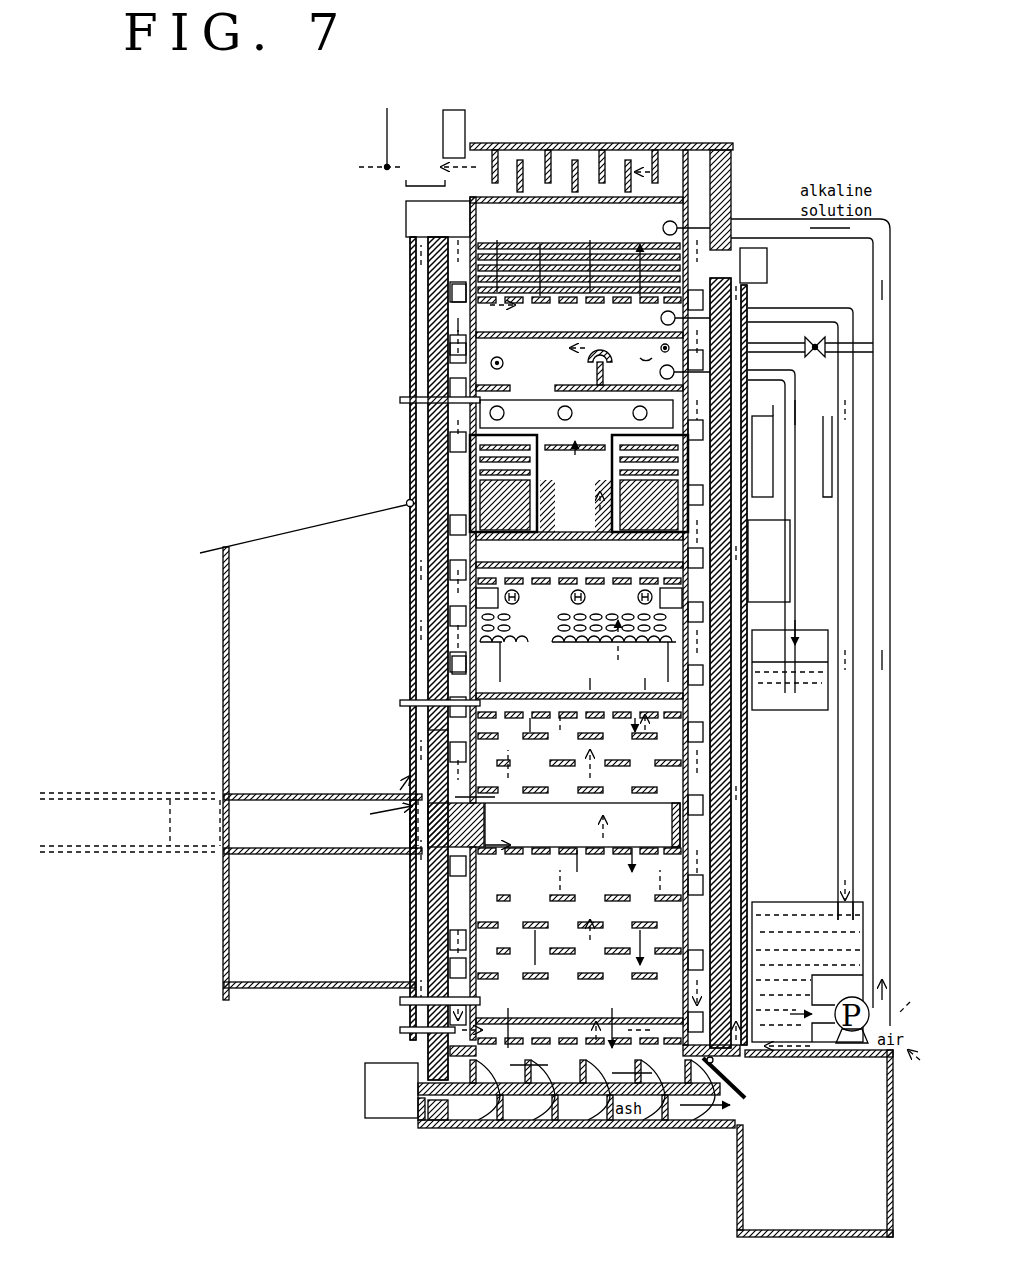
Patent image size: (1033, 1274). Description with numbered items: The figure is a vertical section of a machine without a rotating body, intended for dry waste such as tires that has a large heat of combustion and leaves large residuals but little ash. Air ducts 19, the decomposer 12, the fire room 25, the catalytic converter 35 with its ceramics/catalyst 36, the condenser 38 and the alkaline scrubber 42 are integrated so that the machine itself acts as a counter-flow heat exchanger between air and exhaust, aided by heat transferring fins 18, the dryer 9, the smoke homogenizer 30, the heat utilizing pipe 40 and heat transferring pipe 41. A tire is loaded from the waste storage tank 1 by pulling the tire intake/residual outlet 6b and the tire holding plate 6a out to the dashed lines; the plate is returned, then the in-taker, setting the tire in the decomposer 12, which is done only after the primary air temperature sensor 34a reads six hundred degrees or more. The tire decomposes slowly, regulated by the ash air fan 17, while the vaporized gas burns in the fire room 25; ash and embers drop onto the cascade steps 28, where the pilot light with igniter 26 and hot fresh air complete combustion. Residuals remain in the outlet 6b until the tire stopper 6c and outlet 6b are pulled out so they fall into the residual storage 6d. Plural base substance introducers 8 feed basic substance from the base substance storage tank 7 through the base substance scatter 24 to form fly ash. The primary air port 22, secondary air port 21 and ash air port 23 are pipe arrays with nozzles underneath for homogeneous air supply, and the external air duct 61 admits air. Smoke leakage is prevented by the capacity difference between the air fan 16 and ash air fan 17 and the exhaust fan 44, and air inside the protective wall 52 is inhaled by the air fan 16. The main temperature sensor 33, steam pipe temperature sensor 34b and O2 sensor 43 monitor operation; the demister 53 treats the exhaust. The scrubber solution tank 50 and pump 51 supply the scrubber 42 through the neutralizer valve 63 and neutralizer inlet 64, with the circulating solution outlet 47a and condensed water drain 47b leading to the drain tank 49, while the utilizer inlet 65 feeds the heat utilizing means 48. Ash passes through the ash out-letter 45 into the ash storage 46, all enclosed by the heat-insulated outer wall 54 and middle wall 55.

The waste storage tank 1 is at (243, 773).
The tire holding plate 6a is at (348, 797).
The tire intake/residual outlet 6b is at (412, 846).
The tire stopper 6c is at (348, 854).
The residual storage 6d is at (319, 969).
The base substance storage tank 7 is at (769, 561).
The base substance introducer 8 is at (578, 597).
The dryer 9 is at (480, 357).
The decomposer 12 is at (554, 834).
The air fan 16 is at (410, 222).
The ash air fan 17 is at (779, 273).
The heat transferring fin 18 is at (465, 292).
The air duct 19 is at (455, 322).
The secondary air port 21 is at (565, 571).
The primary air port 22 is at (570, 713).
The ash air port 23 is at (572, 1030).
The base substance scatter 24 is at (574, 624).
The fire room 25 is at (578, 659).
The pilot light with igniter 26 is at (400, 1001).
The cascade steps/embers dropper 28 is at (579, 924).
The smoke homogenizer 30 is at (575, 760).
The main temperature sensor 33 is at (400, 1030).
The primary air temperature sensor 34a is at (400, 703).
The steam pipe temperature sensor 34b is at (400, 400).
The catalytic converter 35 is at (579, 483).
The ceramics/catalyst 36 is at (579, 512).
The condenser 38 is at (579, 361).
The heat utilizing pipe 40 is at (576, 423).
The heat transferring pipe 41 is at (616, 426).
The alkaline scrubber 42 is at (594, 273).
The O2 sensor 43 is at (458, 121).
The exhaust fan 44 is at (410, 152).
The ash out-letter 45 is at (376, 1105).
The ash storage 46 is at (815, 1181).
The circulating solution outlet 47a is at (688, 316).
The condensed water drain 47b is at (688, 375).
The heat utilizing means 48 is at (792, 451).
The drain tank 49 is at (790, 670).
The scrubber solution tank 50 is at (807, 954).
The pump 51 is at (819, 1143).
The protective wall 52 is at (410, 458).
The demister 53 is at (607, 191).
The outer wall (heat insulated) 54 is at (435, 596).
The middle wall 55 is at (473, 487).
The external air duct 61 is at (422, 730).
The neutralizer valve 63 is at (810, 349).
The neutralizer inlet 64 is at (666, 365).
The utilizer inlet 65 is at (502, 368).